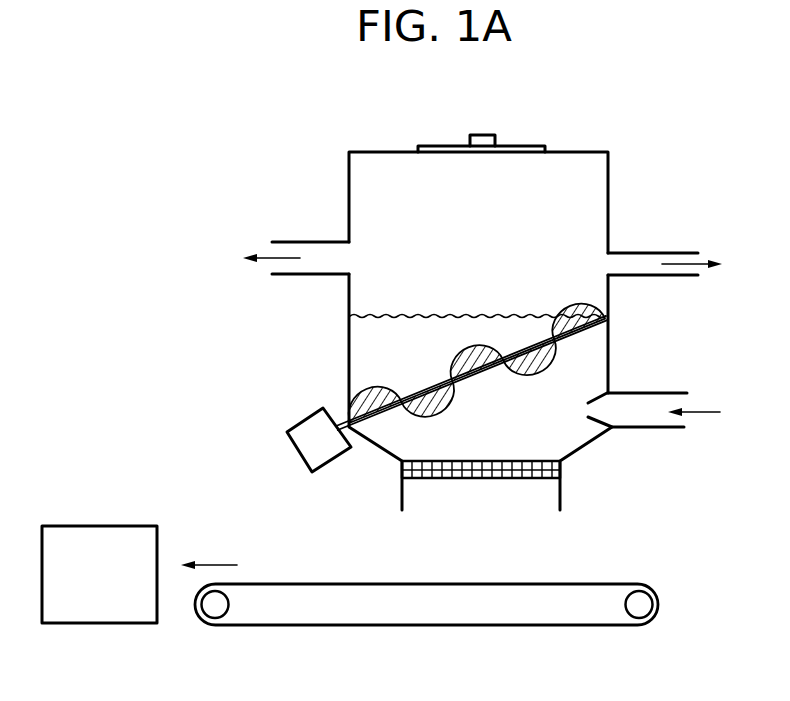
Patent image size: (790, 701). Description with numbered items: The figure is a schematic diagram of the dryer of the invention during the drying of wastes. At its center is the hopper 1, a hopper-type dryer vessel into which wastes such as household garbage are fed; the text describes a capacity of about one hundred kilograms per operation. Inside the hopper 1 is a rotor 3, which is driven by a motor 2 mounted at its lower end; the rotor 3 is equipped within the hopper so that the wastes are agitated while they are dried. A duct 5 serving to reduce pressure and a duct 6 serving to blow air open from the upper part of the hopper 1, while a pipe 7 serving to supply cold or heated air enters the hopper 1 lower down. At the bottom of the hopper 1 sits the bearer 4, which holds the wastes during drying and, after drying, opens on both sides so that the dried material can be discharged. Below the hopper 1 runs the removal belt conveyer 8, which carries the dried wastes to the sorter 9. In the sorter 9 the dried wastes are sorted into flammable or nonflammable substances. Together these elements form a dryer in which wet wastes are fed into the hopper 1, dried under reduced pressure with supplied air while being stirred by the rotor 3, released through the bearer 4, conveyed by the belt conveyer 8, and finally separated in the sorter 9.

The hopper 1 is at (611, 173).
The motor 2 is at (300, 423).
The rotor 3 is at (580, 320).
The bearer 4 is at (401, 472).
The duct serving to reduce pressure 5 is at (655, 253).
The duct serving to blow air 6 is at (302, 242).
The pipe serving to supply cold or heated air 7 is at (666, 393).
The belt conveyer 8 is at (300, 612).
The sorter 9 is at (113, 612).